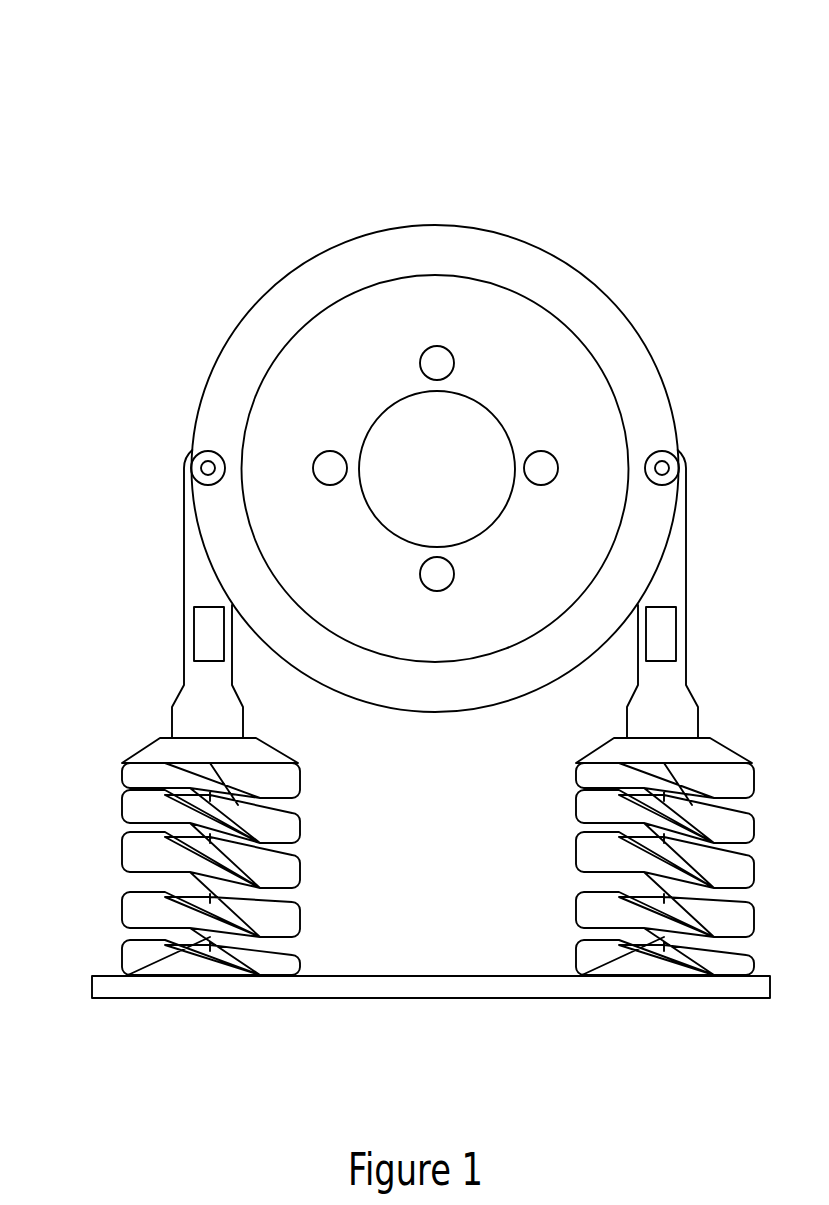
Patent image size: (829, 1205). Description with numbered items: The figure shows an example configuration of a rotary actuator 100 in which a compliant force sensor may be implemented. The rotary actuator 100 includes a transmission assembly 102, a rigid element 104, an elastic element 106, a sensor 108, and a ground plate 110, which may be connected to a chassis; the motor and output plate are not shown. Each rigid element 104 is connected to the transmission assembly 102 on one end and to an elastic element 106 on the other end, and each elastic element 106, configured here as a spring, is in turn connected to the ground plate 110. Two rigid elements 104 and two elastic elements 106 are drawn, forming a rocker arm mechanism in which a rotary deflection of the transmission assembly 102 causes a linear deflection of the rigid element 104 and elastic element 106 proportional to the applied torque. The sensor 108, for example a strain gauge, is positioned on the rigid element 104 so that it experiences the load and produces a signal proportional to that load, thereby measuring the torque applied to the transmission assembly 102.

The rotary actuator 100 is at (110, 84).
The transmission assembly 102 is at (607, 313).
The rigid element 104 is at (187, 547).
The elastic element 106 is at (122, 805).
The sensor 108 is at (203, 630).
The ground plate 110 is at (655, 998).